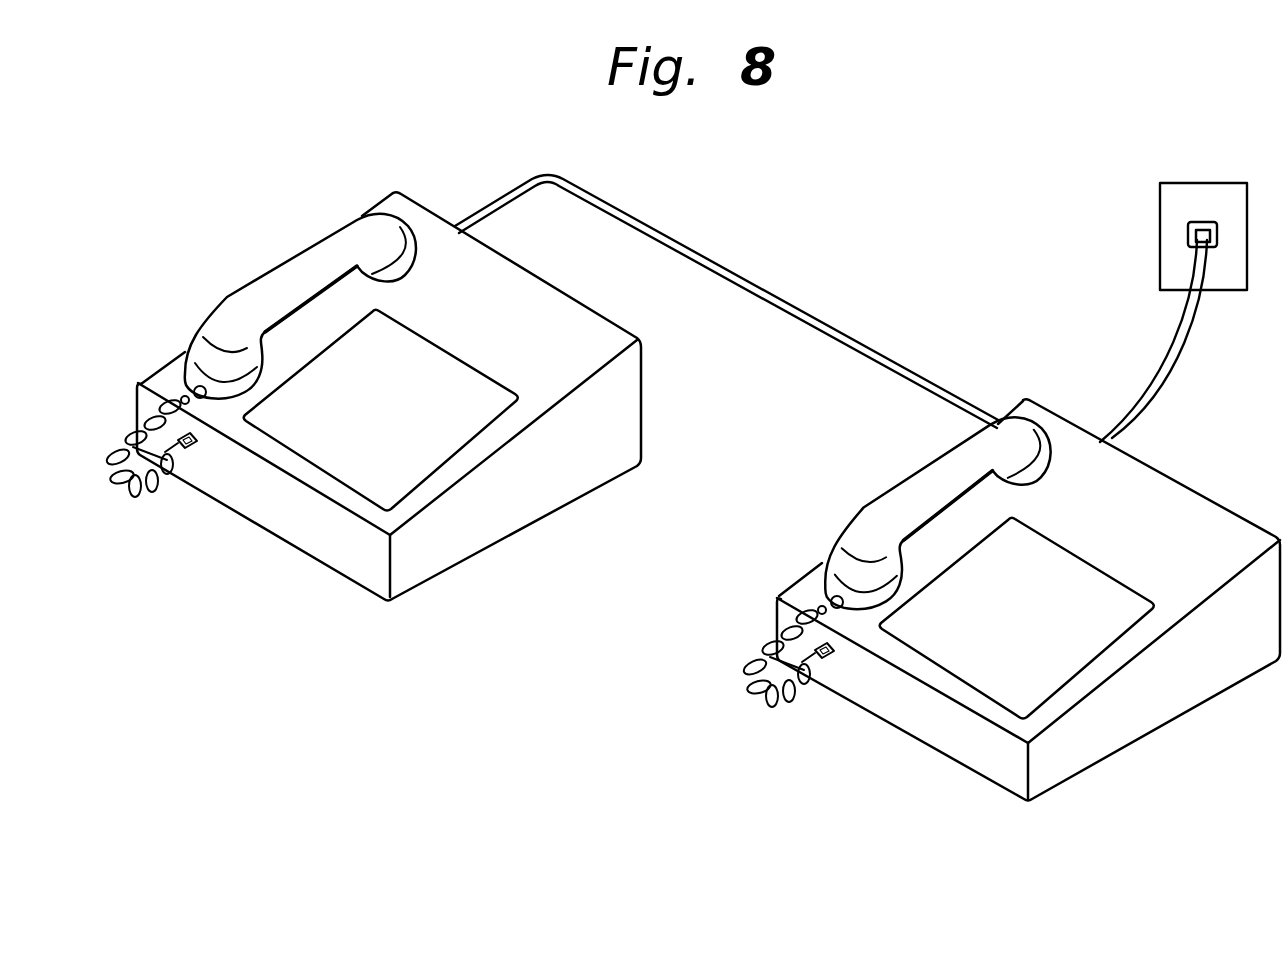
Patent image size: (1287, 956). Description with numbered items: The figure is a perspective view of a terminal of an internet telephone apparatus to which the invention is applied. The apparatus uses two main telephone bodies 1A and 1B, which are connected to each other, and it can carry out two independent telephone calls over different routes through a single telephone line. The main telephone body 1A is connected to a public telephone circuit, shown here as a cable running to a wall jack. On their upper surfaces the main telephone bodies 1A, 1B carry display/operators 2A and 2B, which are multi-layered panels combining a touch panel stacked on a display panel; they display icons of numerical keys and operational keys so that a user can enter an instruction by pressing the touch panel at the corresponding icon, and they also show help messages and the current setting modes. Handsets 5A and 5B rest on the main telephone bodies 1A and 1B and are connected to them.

The main telephone body 1A is at (1107, 742).
The main telephone body 1B is at (485, 532).
The display/operator 2A is at (975, 675).
The display/operator 2B is at (333, 455).
The handset 5A is at (898, 502).
The handset 5B is at (262, 285).